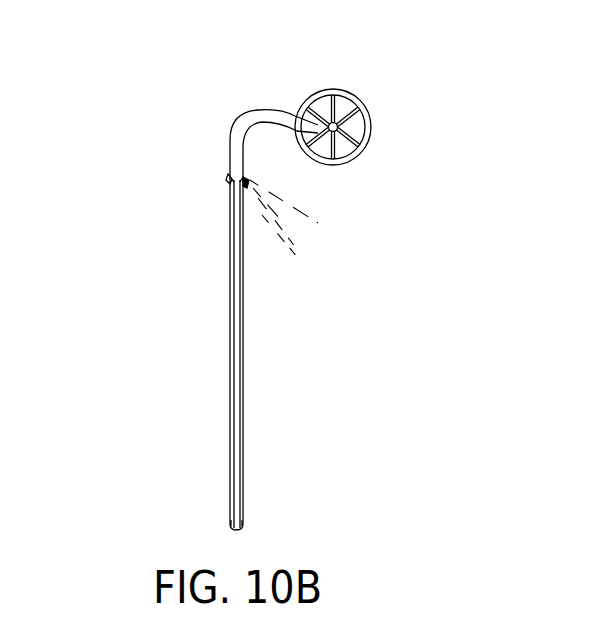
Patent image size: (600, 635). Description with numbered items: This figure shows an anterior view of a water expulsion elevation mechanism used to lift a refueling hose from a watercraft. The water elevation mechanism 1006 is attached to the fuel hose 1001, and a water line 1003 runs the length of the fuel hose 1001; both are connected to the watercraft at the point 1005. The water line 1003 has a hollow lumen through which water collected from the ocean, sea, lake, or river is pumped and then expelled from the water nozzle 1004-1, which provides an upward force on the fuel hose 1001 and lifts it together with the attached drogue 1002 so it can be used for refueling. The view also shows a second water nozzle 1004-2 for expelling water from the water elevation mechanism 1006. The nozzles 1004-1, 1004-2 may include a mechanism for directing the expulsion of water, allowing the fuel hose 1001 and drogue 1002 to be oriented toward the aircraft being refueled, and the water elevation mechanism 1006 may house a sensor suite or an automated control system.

The fuel hose 1001 is at (226, 133).
The drogue 1002 is at (380, 106).
The water line 1003 is at (228, 437).
The water nozzle 1004-1 is at (246, 183).
The second water nozzle 1004-2 is at (226, 178).
The point 1005 is at (214, 533).
The water elevation mechanism 1006 is at (260, 173).